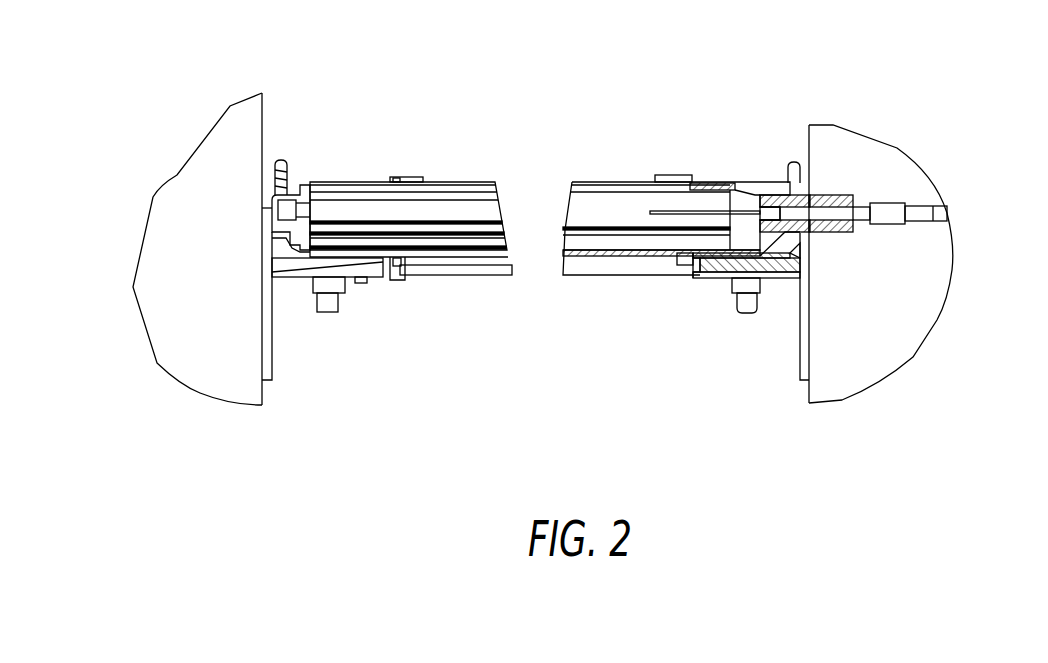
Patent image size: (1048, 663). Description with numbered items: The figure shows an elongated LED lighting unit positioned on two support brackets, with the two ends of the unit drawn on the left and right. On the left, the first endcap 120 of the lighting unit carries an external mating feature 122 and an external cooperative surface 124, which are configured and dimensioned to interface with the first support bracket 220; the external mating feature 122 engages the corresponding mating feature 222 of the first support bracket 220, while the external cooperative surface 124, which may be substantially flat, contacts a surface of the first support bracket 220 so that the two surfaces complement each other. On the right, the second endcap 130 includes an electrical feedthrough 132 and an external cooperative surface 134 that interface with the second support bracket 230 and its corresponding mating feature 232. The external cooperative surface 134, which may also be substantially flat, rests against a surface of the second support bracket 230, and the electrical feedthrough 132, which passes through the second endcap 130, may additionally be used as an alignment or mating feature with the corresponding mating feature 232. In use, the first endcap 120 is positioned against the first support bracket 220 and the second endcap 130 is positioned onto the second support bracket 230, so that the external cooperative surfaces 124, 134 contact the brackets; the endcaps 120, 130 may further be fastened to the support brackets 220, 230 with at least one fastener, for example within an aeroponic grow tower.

The first endcap 120 is at (384, 164).
The external mating feature 122 is at (292, 194).
The external cooperative surface 124 is at (312, 279).
The first support bracket 220 is at (355, 283).
The corresponding mating feature 222 is at (277, 207).
The second endcap 130 is at (673, 167).
The electrical feedthrough 132 is at (833, 180).
The external cooperative surface 134 is at (756, 262).
The second support bracket 230 is at (710, 267).
The corresponding mating feature 232 is at (797, 238).